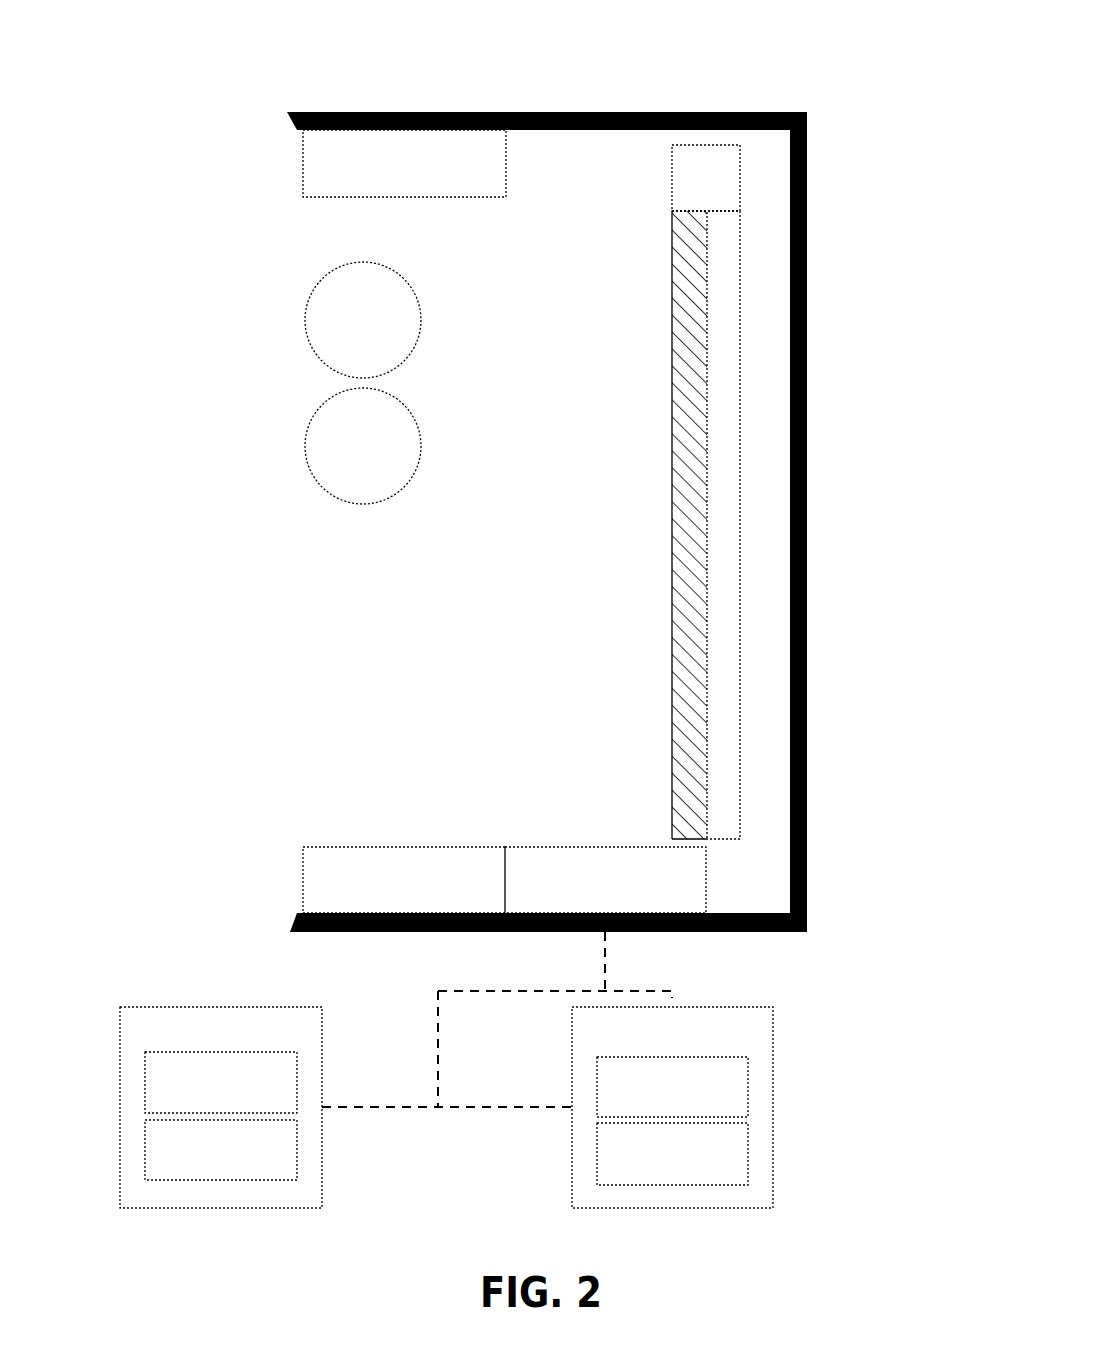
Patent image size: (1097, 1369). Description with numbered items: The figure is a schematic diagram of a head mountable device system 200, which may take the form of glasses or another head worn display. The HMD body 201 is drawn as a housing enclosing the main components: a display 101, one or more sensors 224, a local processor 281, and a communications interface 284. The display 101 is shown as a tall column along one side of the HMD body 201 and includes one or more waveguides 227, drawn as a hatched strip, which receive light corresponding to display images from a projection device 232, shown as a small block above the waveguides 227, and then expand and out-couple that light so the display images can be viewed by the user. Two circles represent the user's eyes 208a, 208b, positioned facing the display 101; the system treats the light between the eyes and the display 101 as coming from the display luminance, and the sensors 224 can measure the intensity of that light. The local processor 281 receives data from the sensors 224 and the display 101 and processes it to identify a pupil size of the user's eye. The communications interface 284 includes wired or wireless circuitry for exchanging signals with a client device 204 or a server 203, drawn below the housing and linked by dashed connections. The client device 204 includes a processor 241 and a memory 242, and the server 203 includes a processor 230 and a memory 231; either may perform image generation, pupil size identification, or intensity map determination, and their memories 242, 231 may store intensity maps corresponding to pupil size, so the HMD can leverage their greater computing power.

The head mountable device system 200 is at (858, 64).
The HMD body 201 is at (807, 470).
The display 101 is at (754, 223).
The projection device 232 is at (740, 178).
The waveguide 227 is at (690, 303).
The sensors 224 is at (405, 197).
The eye 208a is at (305, 330).
The eye 208b is at (305, 445).
The local processor 281 is at (400, 847).
The communications interface 284 is at (603, 847).
The client device 204 is at (180, 1140).
The processor 241 is at (145, 1083).
The memory 242 is at (145, 1150).
The server 203 is at (714, 1141).
The processor 230 is at (748, 1087).
The memory 231 is at (748, 1155).